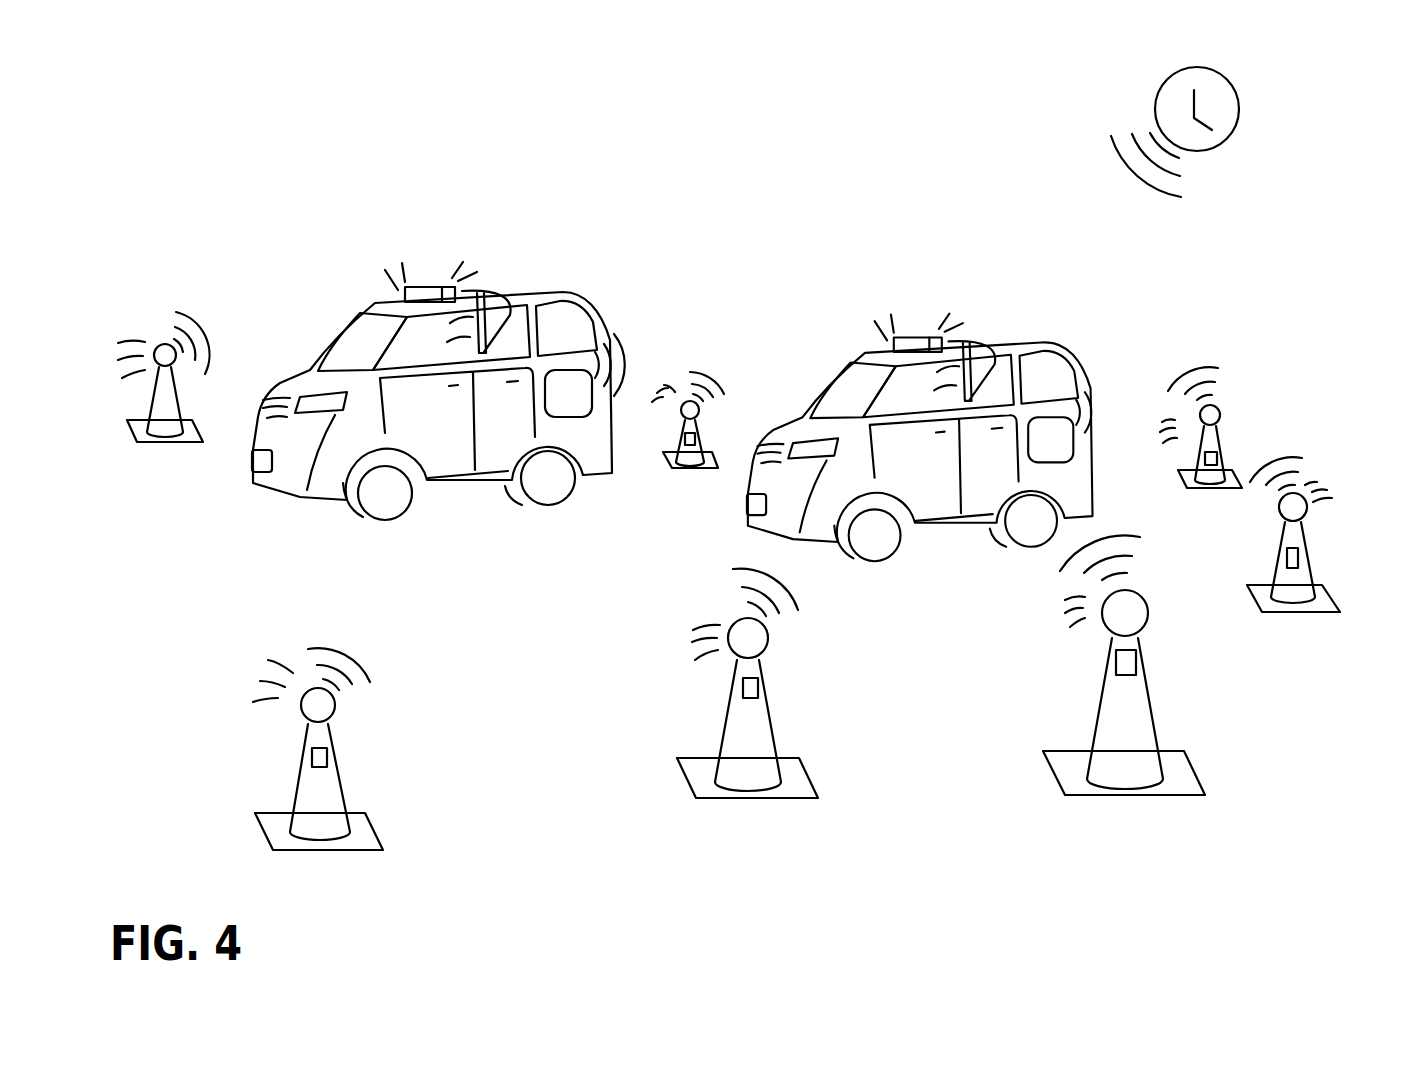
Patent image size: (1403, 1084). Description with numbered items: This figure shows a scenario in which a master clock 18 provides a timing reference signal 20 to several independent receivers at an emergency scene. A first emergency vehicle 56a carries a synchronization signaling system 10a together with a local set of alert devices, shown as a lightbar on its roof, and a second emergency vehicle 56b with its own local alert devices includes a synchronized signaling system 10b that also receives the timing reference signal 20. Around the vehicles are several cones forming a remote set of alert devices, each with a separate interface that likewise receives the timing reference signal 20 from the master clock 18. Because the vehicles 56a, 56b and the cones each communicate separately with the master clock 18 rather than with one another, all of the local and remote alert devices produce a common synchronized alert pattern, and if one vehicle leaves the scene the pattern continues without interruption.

The synchronization signaling system 10a is at (575, 370).
The synchronized signaling system 10b is at (1053, 417).
The master clock 18 is at (1230, 80).
The timing reference signal 20 is at (1122, 168).
The emergency vehicle 56a is at (365, 308).
The second emergency vehicle 56b is at (857, 357).